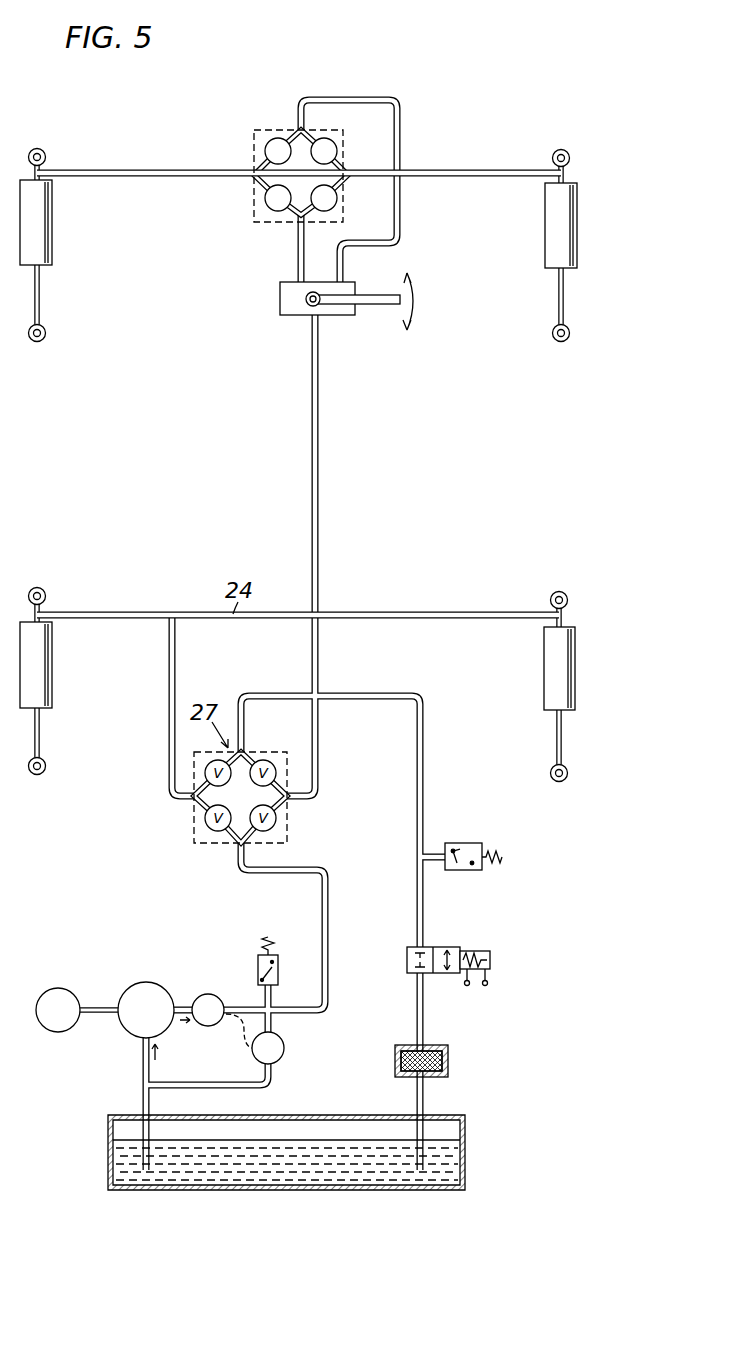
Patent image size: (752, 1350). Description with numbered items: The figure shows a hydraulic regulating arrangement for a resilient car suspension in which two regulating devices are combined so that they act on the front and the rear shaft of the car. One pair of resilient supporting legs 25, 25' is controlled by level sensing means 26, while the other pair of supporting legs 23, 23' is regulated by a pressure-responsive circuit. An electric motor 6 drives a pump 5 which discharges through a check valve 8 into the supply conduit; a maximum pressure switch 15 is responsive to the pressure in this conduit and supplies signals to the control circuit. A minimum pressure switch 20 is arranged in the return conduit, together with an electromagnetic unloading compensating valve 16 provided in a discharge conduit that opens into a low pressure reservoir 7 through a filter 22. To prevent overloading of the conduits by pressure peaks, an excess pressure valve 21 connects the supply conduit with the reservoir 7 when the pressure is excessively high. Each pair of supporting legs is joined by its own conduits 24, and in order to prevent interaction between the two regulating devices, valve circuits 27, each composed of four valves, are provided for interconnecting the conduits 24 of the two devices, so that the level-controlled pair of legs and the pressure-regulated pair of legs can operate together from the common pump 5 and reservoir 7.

The pump 5 is at (146, 982).
The electric motor 6 is at (59, 988).
The low pressure reservoir 7 is at (108, 1155).
The check valve 8 is at (208, 993).
The maximum pressure switch 15 is at (284, 957).
The electromagnetic unloading compensating valve 16 is at (440, 947).
The minimum pressure switch 20 is at (470, 842).
The excess pressure valve 21 is at (285, 1047).
The filter 22 is at (450, 1062).
The supporting leg 23 is at (66, 681).
The supporting leg 23' is at (591, 687).
The conduits 24 is at (164, 172).
The supporting leg 25 is at (68, 245).
The supporting leg 25' is at (592, 246).
The level sensing means 26 is at (280, 300).
The valve circuits 27 is at (288, 119).